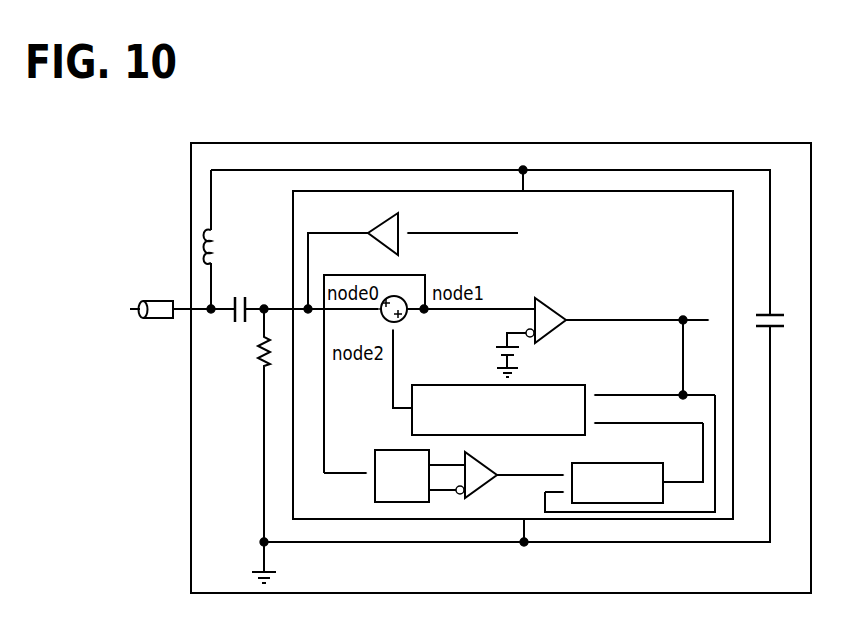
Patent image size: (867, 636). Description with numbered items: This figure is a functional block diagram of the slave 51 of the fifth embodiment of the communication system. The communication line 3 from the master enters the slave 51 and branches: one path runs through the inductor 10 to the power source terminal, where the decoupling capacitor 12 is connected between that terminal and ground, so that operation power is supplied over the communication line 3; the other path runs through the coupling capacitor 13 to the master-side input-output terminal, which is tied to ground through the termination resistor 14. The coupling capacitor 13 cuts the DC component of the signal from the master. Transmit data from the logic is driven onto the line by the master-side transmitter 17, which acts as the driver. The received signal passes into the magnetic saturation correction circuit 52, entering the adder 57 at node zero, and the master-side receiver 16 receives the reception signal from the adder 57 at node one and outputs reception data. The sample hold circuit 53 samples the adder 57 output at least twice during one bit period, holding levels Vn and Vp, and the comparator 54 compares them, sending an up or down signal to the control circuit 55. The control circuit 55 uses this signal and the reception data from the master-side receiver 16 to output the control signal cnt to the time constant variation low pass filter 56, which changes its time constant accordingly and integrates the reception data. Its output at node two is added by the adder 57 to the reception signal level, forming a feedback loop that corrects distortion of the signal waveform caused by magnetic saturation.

The communication line 3 is at (160, 300).
The inductor 10 is at (216, 250).
The decoupling capacitor 12 is at (772, 314).
The coupling capacitor 13 is at (244, 297).
The termination resistor 14 is at (258, 351).
The master-side receiver 16 is at (548, 304).
The master-side transmitter 17 is at (380, 221).
The slave 51 is at (676, 143).
The magnetic saturation correction circuit 52 is at (490, 277).
The sample hold circuit 53 is at (375, 491).
The comparator 54 is at (486, 484).
The control circuit 55 is at (602, 463).
The time constant variation low pass filter 56 is at (546, 384).
The adder 57 is at (403, 318).